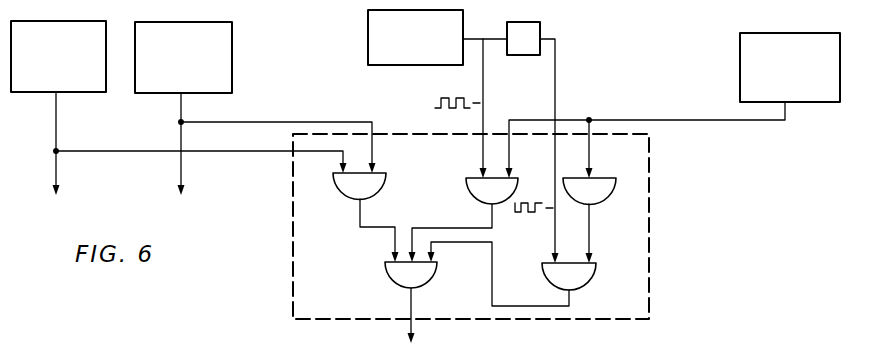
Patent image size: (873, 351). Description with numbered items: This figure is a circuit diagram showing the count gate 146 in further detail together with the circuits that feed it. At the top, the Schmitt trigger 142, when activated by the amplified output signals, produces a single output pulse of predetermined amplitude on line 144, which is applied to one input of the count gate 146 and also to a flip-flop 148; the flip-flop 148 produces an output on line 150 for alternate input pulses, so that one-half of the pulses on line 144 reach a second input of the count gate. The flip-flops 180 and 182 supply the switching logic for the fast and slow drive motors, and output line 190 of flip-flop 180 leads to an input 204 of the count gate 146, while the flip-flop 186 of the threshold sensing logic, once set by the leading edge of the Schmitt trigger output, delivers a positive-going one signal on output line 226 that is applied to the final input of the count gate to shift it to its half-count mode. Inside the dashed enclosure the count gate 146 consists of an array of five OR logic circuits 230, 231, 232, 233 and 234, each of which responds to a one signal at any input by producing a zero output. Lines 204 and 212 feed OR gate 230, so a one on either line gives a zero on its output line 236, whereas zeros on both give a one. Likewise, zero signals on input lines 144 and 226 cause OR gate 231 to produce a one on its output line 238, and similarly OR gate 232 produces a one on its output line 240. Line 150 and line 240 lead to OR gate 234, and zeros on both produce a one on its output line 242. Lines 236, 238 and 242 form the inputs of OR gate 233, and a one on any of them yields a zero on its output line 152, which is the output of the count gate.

The Schmitt trigger 142 is at (366, 34).
The line 144 is at (484, 93).
The count gate 146 is at (293, 252).
The flip-flop 148 is at (541, 26).
The line 150 is at (556, 76).
The output line 152 is at (410, 307).
The flip-flop 180 is at (28, 83).
The flip-flop 182 is at (228, 55).
The flip-flop 186 is at (752, 50).
The output line 190 is at (57, 126).
The input 204 is at (134, 151).
The line 212 is at (224, 122).
The output line 226 is at (668, 119).
The OR gate 230 is at (380, 180).
The OR gate 231 is at (467, 181).
The OR gate 232 is at (597, 182).
The OR gate 233 is at (398, 269).
The OR gate 234 is at (577, 277).
The output line 236 is at (357, 224).
The output line 238 is at (478, 228).
The output line 240 is at (590, 232).
The output line 242 is at (491, 289).